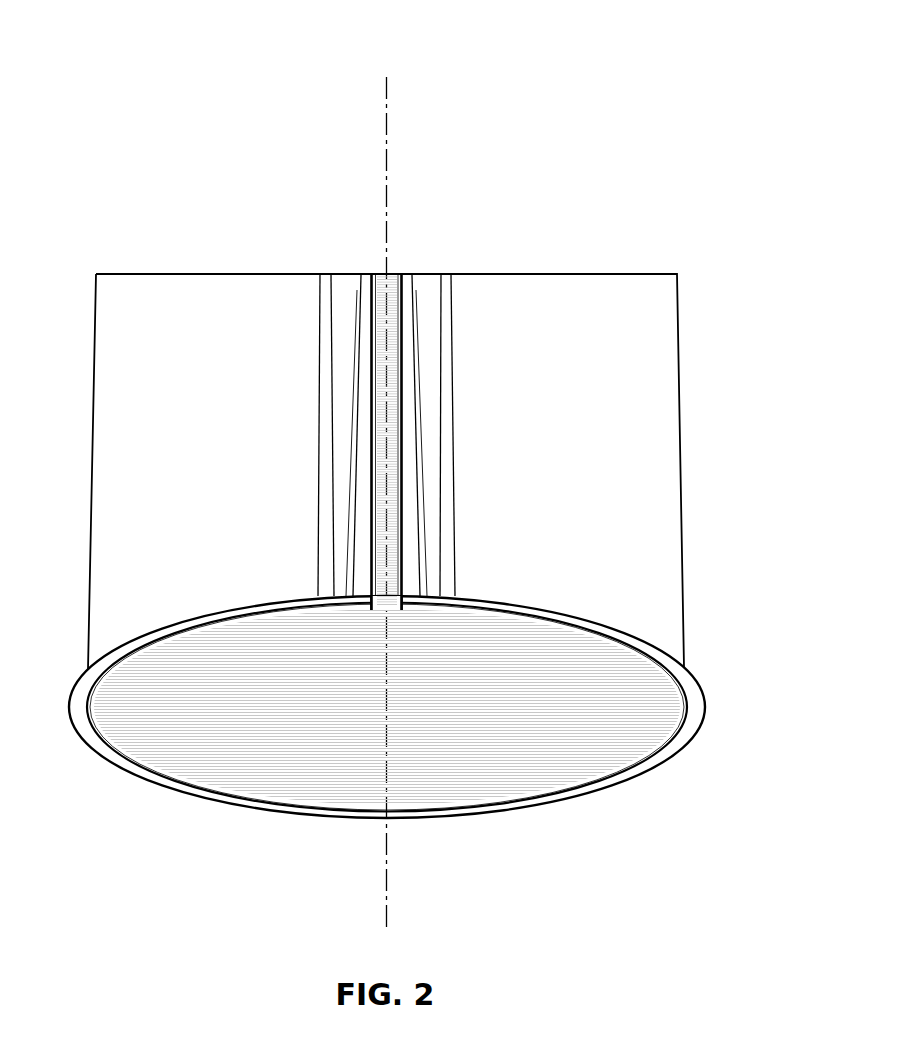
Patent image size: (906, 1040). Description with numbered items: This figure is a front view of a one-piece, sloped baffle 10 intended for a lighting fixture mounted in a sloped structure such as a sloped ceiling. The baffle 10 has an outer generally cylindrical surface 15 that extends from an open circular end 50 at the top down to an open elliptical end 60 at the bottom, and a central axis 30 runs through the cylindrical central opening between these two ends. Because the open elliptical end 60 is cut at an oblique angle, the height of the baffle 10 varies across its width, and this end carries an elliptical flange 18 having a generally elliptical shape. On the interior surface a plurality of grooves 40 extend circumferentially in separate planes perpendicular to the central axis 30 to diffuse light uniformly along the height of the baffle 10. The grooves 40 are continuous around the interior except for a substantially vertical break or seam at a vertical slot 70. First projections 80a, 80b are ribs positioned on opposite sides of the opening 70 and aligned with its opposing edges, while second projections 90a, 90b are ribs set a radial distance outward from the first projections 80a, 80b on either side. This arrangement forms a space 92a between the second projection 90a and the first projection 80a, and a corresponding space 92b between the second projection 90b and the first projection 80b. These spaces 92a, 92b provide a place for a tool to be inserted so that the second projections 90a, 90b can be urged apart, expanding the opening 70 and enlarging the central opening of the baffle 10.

The one-piece, sloped baffle 10 is at (707, 180).
The outer generally cylindrical surface 15 is at (549, 457).
The elliptical flange 18 is at (695, 700).
The central axis 30 is at (388, 87).
The plurality of grooves 40 is at (285, 766).
The open circular end 50 is at (113, 274).
The open elliptical end 60 is at (130, 768).
The vertical slot 70 is at (394, 258).
The first projection 80a is at (364, 288).
The first projection 80b is at (409, 288).
The second projection 90a is at (325, 304).
The second projection 90b is at (450, 304).
The space 92a is at (342, 368).
The space 92b is at (431, 368).